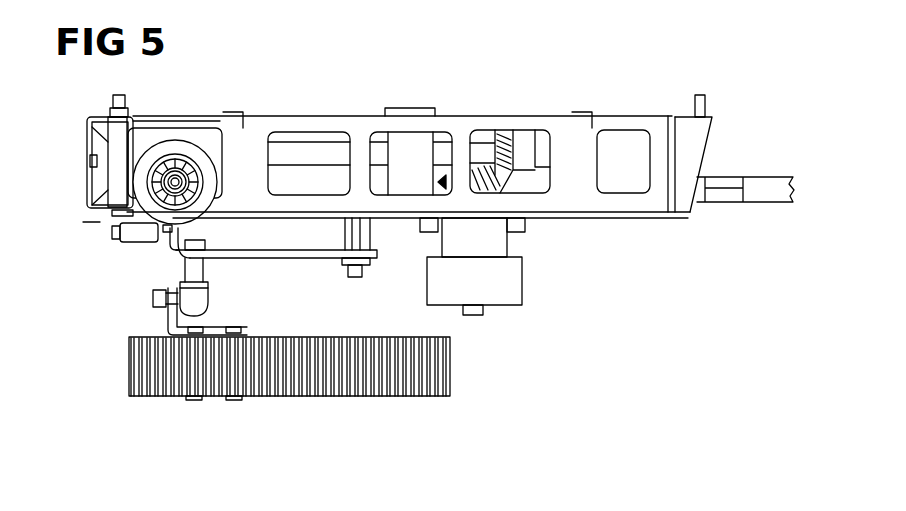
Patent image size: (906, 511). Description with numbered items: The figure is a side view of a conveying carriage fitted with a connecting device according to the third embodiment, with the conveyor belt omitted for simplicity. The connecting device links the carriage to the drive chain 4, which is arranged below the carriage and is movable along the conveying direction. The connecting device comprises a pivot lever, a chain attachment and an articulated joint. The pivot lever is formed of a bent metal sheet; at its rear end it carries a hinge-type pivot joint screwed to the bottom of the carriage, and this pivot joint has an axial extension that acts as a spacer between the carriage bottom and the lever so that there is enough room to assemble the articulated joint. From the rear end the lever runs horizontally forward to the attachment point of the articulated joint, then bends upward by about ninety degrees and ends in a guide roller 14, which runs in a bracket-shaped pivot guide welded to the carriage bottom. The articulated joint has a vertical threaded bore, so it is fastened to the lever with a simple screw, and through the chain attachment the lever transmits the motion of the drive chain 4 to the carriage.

The guide roller 14 is at (113, 229).
The drive chain 4 is at (360, 398).